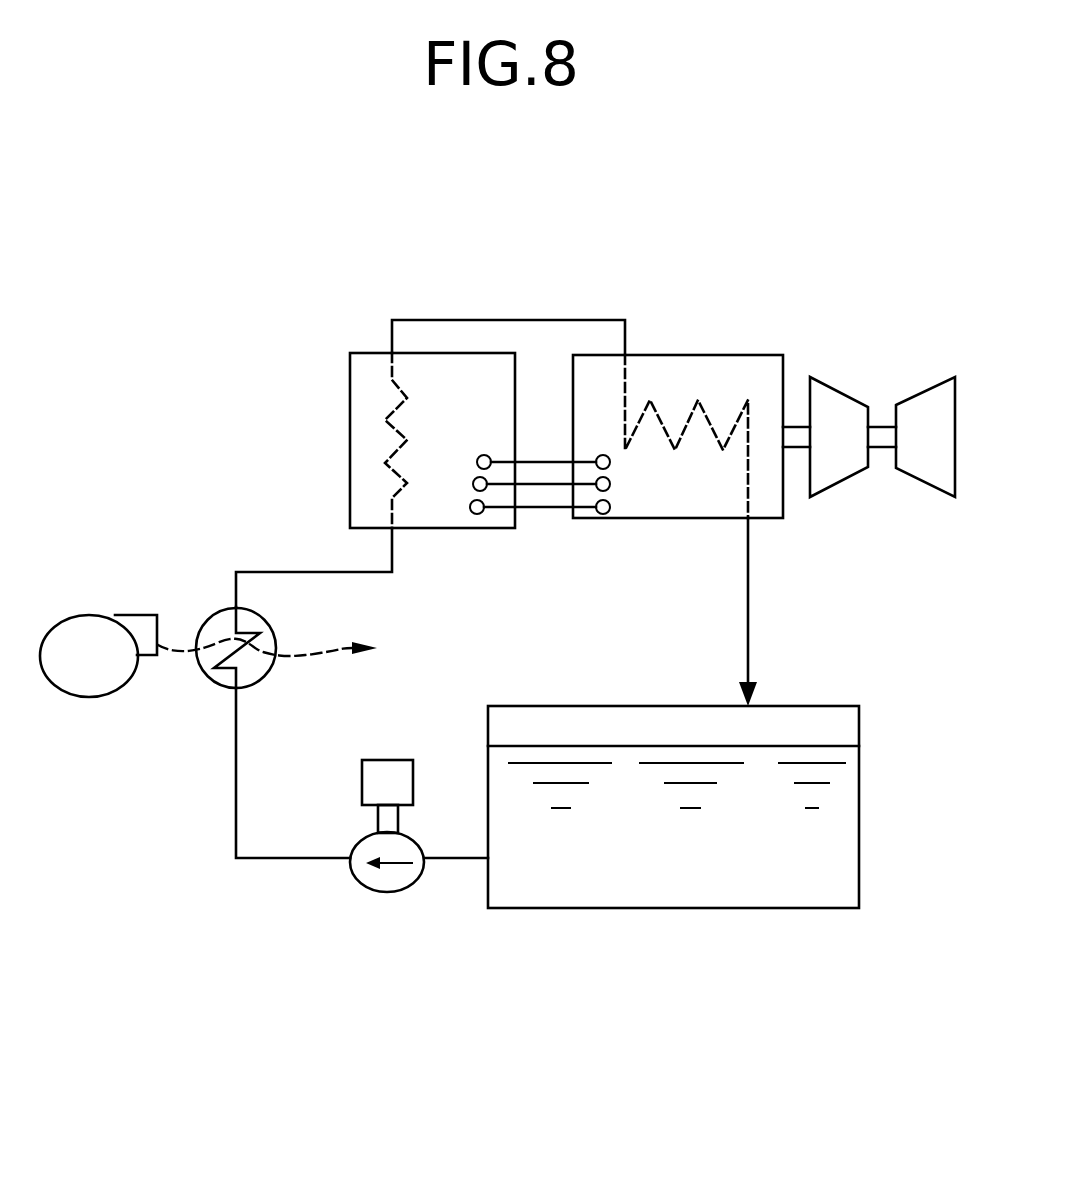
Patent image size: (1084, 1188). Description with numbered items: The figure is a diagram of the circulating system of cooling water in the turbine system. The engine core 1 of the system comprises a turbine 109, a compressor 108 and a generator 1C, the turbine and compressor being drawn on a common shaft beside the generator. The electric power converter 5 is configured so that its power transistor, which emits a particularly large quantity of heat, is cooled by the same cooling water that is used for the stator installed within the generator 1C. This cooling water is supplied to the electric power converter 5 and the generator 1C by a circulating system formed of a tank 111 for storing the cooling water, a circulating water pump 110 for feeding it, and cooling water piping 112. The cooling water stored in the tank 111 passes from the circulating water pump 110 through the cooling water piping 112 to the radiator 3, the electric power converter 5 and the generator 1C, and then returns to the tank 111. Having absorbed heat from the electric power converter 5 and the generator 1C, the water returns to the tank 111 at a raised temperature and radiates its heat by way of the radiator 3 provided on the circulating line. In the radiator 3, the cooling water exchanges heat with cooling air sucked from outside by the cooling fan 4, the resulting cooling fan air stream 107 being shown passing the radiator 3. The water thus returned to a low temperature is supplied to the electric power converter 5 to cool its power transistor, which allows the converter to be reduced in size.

The engine core 1 is at (808, 348).
The generator 1C is at (685, 355).
The radiator 3 is at (215, 680).
The cooling fan 4 is at (85, 625).
The electric power converter 5 is at (350, 380).
The cooling fan air stream 107 is at (320, 657).
The compressor 108 is at (840, 390).
The turbine 109 is at (912, 478).
The circulating water pump 110 is at (385, 895).
The tank 111 is at (550, 882).
The cooling water piping 112 is at (513, 320).